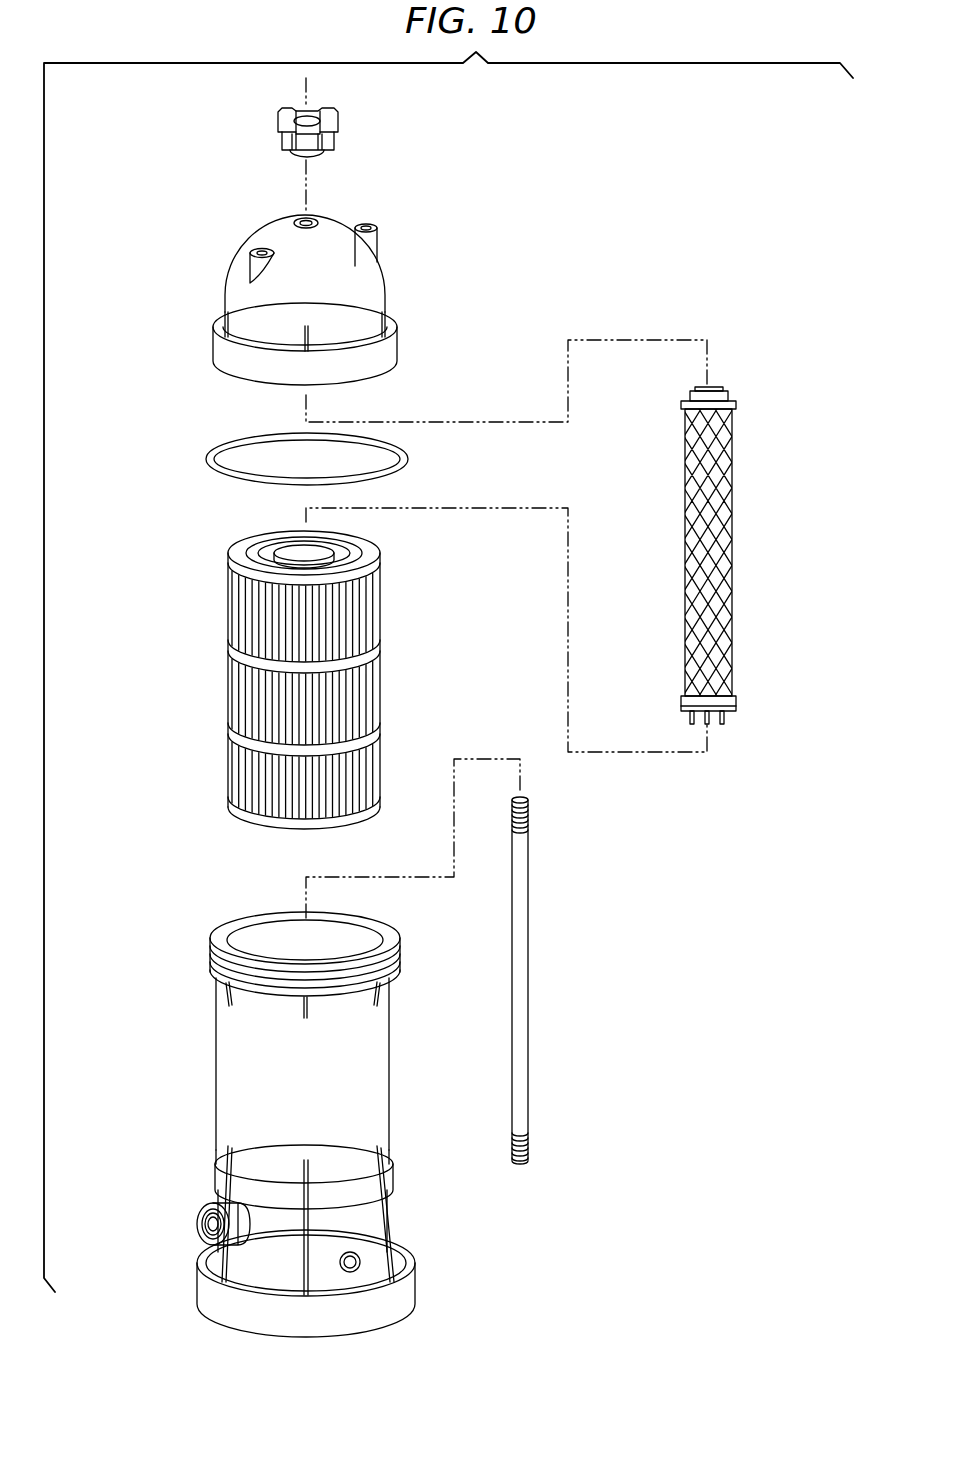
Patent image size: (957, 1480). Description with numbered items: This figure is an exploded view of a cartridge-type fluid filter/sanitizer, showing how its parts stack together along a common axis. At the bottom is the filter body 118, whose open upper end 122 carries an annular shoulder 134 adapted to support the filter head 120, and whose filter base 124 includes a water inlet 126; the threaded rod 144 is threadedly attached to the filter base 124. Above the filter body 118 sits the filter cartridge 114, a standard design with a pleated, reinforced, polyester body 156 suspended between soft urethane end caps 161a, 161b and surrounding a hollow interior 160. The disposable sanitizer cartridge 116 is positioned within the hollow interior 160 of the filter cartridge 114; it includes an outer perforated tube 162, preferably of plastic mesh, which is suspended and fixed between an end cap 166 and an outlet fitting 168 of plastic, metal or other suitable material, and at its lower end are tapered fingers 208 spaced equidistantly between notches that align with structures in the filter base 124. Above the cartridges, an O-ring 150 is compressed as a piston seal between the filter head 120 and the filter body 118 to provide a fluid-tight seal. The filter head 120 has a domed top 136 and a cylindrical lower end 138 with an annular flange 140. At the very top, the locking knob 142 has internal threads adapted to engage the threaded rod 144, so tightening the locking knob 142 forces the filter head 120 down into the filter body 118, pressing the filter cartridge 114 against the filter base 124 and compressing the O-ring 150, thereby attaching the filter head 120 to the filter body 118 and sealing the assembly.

The locking knob 142 is at (278, 131).
The filter head 120 is at (298, 268).
The domed top 136 is at (271, 236).
The cylindrical lower end 138 is at (373, 292).
The annular flange 140 is at (225, 350).
The O-ring 150 is at (230, 447).
The filter cartridge 114 is at (316, 685).
The upper end cap 161a is at (236, 553).
The hollow interior 160 is at (322, 548).
The pleated, reinforced, polyester body 156 is at (356, 697).
The lower end cap 161b is at (236, 828).
The sanitizer cartridge 116 is at (708, 565).
The outer perforated tube 162 is at (686, 506).
The end cap 166 is at (742, 384).
The outlet fitting 168 is at (752, 710).
The tapered fingers 208 is at (690, 718).
The threaded rod 144 is at (528, 862).
The filter body 118 is at (305, 1124).
The annular shoulder 134 is at (215, 952).
The upper end 122 is at (216, 1044).
The water inlet 126 is at (197, 1222).
The filter base 124 is at (400, 1286).